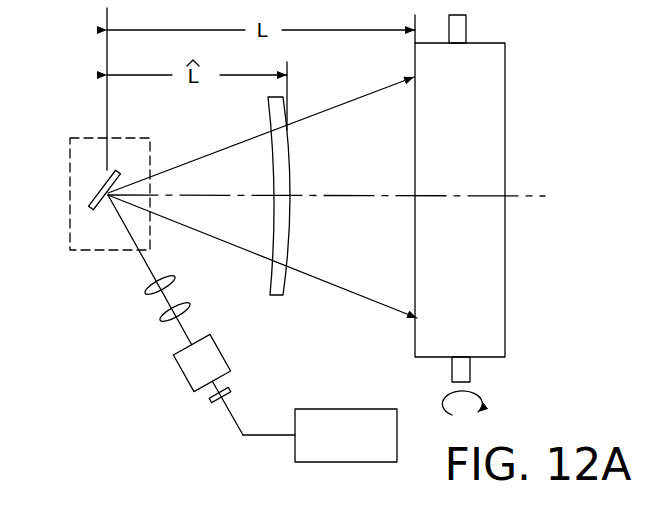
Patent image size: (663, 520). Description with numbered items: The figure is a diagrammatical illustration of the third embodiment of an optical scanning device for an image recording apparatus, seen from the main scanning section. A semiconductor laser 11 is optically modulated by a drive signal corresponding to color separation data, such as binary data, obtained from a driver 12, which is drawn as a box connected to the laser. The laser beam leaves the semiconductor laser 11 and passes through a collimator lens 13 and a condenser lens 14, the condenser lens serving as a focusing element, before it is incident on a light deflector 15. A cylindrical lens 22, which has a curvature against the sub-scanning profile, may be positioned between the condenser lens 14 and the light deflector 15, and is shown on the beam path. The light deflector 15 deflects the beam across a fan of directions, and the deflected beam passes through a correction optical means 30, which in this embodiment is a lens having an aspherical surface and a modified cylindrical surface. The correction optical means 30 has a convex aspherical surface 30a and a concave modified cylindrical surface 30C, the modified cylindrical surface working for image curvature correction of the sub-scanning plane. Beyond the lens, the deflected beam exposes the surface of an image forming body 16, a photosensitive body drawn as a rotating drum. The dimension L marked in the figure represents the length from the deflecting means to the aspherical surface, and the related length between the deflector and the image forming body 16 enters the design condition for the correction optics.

The semiconductor laser 11 is at (210, 393).
The driver 12 is at (340, 410).
The collimator lens 13 is at (183, 373).
The condenser lens 14 is at (163, 322).
The light deflector 15 is at (67, 170).
The image forming body 16 is at (498, 274).
The cylindrical lens 22 is at (145, 292).
The correction optical means 30 is at (288, 168).
The concave modified cylindrical surface 30C is at (273, 168).
The convex aspherical surface 30a is at (290, 233).